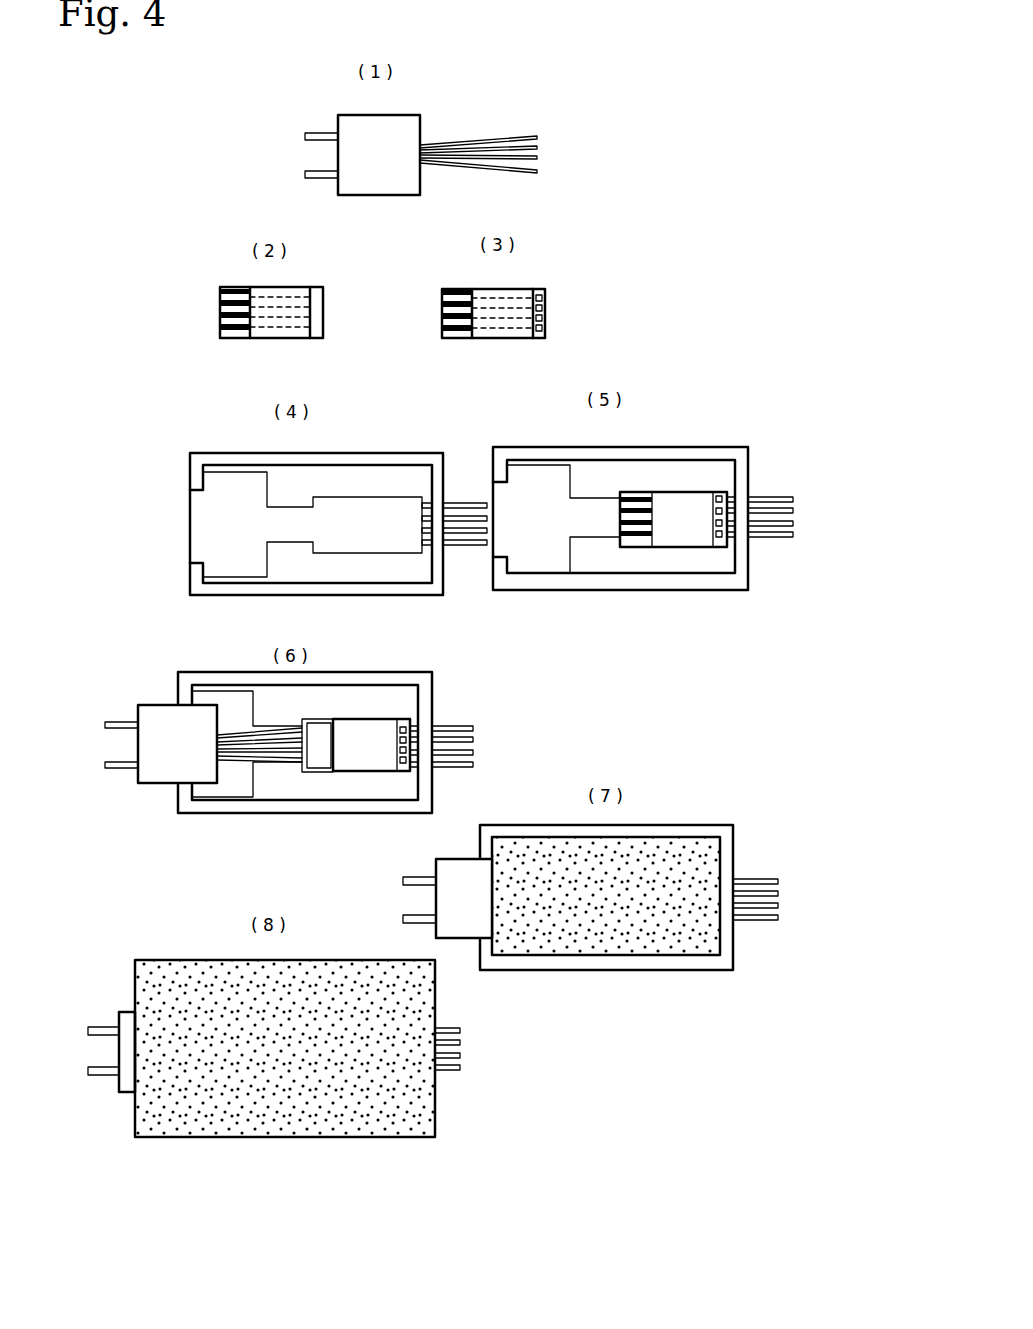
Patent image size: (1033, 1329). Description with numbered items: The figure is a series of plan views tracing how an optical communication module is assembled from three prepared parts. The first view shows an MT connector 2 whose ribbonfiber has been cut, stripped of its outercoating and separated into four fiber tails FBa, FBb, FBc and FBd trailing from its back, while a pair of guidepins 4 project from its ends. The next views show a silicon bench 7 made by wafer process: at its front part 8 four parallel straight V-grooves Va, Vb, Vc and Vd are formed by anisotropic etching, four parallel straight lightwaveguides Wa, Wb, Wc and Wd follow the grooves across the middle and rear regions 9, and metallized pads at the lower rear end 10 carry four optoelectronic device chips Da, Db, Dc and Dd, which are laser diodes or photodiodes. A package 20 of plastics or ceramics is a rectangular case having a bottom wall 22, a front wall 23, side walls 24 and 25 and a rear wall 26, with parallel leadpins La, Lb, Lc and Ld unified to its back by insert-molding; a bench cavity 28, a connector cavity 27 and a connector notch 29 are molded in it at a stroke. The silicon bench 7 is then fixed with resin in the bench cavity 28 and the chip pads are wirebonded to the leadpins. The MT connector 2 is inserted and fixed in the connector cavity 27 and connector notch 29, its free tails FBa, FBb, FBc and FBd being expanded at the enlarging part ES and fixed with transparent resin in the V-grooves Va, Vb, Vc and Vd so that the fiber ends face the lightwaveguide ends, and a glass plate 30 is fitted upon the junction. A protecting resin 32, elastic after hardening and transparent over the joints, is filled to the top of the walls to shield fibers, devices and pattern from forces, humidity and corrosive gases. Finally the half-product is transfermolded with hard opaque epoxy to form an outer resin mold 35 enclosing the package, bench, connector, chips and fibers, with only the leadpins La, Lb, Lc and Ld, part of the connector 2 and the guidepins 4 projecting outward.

The MT connector 2 is at (391, 182).
The lead terminal 4 is at (320, 134).
The silicon bench 7 is at (273, 288).
The front part 8 is at (238, 339).
The middle and rear regions 9 is at (275, 339).
The lower rear end 10 is at (318, 339).
The package 20 is at (190, 460).
The bottom wall 22 is at (373, 480).
The front wall 23 is at (197, 583).
The side wall 24 is at (420, 453).
The side wall 25 is at (392, 585).
The rear wall 26 is at (445, 585).
The connector cavity 27 is at (258, 560).
The bench cavity 28 is at (360, 553).
The connector notch 29 is at (192, 530).
The glass plate 30 is at (318, 732).
The protecting resin 32 is at (600, 935).
The outer resin mold 35 is at (187, 990).
The enlarging part ES is at (293, 518).
The fiber tail FBa is at (512, 136).
The fiber tail FBb is at (537, 142).
The fiber tail FBc is at (537, 156).
The fiber tail FBd is at (530, 172).
The V-groove Va is at (455, 296).
The V-groove Vb is at (445, 310).
The V-groove Vc is at (448, 318).
The V-groove Vd is at (448, 332).
The lightwaveguide Wa is at (283, 297).
The lightwaveguide Wb is at (296, 307).
The lightwaveguide Wc is at (296, 317).
The lightwaveguide Wd is at (296, 327).
The optoelectronic device chip Da is at (541, 296).
The optoelectronic device chip Db is at (544, 307).
The optoelectronic device chip Dc is at (545, 318).
The optoelectronic device chip Dd is at (546, 330).
The leadpin La is at (448, 502).
The leadpin Lb is at (462, 1043).
The leadpin Lc is at (473, 534).
The leadpin Ld is at (480, 548).